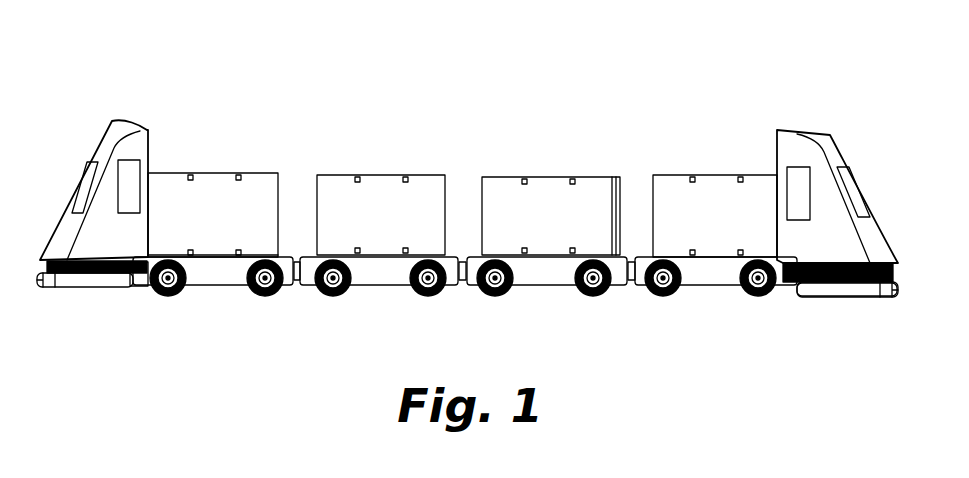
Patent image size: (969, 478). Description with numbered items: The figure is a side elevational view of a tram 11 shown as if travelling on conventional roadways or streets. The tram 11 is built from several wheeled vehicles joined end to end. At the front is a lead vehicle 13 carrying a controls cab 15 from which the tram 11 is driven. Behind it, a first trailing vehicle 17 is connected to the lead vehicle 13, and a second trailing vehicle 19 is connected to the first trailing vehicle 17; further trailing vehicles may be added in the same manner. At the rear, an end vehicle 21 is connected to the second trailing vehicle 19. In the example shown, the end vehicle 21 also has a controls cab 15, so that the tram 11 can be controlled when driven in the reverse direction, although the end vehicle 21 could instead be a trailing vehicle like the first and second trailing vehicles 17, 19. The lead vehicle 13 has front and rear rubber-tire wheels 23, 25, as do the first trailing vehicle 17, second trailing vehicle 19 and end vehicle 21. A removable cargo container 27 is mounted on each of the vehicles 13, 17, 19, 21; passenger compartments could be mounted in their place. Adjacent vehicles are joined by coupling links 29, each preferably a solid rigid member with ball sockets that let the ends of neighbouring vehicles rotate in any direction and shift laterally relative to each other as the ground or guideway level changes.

The tram 11 is at (587, 137).
The lead vehicle 13 is at (810, 300).
The controls cab 15 is at (143, 130).
The first trailing vehicle 17 is at (550, 290).
The second trailing vehicle 19 is at (378, 288).
The end vehicle 21 is at (205, 290).
The front rubber-tire wheel 23 is at (757, 303).
The rear rubber-tire wheel 25 is at (660, 300).
The removable cargo container 27 is at (380, 172).
The coupling link 29 is at (630, 288).